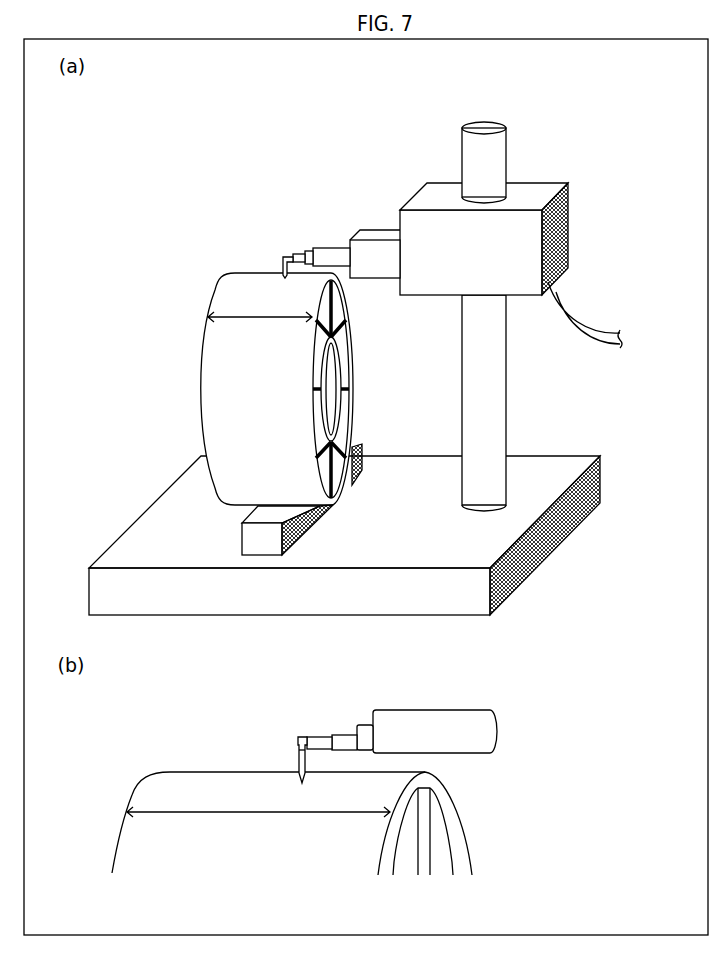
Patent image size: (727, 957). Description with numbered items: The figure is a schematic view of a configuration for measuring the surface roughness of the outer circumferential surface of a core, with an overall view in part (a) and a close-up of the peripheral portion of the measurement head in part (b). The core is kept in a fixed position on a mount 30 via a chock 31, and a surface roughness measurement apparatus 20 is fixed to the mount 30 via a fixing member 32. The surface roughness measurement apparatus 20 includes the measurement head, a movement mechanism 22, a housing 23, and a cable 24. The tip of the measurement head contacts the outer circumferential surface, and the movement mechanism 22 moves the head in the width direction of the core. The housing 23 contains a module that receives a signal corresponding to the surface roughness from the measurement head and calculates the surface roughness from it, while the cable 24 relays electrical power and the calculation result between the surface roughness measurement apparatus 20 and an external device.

The surface roughness measurement apparatus 20 is at (452, 205).
The movement mechanism 22 is at (381, 233).
The housing 23 is at (441, 188).
The cable 24 is at (583, 332).
The mount 30 is at (162, 503).
The chock 31 is at (240, 538).
The fixing member 32 is at (500, 378).